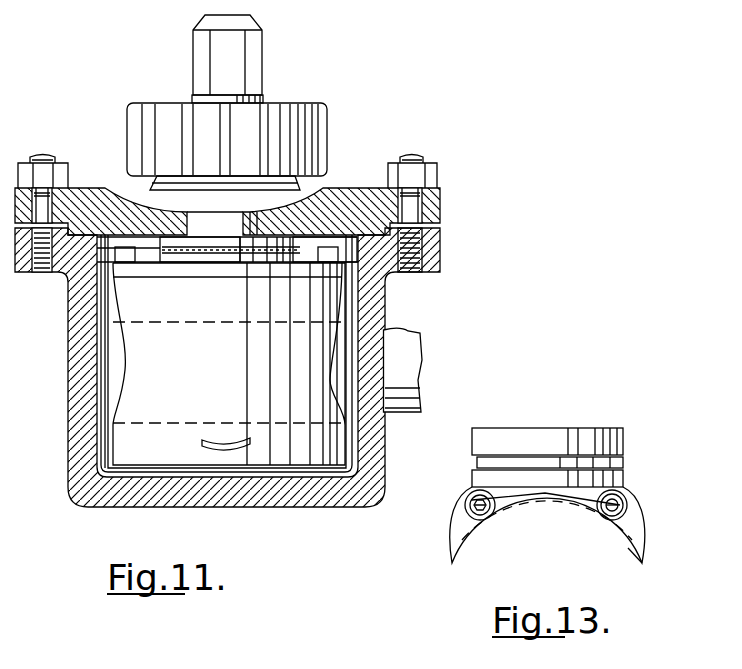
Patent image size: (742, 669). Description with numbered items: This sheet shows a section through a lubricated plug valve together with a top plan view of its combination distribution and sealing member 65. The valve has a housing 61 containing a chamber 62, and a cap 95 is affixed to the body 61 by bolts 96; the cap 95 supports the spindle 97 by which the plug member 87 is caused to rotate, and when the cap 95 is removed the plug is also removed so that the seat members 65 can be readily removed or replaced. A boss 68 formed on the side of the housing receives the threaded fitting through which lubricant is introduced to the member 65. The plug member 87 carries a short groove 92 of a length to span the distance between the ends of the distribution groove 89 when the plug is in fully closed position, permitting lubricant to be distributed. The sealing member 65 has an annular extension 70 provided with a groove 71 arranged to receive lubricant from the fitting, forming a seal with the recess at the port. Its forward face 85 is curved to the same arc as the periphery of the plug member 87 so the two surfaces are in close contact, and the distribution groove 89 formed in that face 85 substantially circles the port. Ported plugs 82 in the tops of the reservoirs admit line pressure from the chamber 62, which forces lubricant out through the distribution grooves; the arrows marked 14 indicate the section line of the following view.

In FIG. 11, the spindle 97 is at (262, 70).
In FIG. 11, the cap 95 is at (353, 192).
In FIG. 11, the bolts 96 is at (413, 160).
In FIG. 11, the boss 68 is at (408, 333).
In FIG. 11, the housing 61 is at (82, 367).
In FIG. 11, the chamber 62 is at (115, 385).
In FIG. 11, the plug member 87 is at (229, 364).
In FIG. 11, the short groove 92 is at (228, 442).
In FIG. 13, the annular extension 70 is at (498, 437).
In FIG. 13, the groove 71 is at (478, 460).
In FIG. 13, the combination distribution and sealing member 65 is at (640, 432).
In FIG. 13, the ported plugs 82 is at (618, 513).
In FIG. 13, the distribution groove 89 is at (538, 507).
In FIG. 13, the forward face 85 is at (622, 548).
In FIG. 13, the section line 14- 14 is at (482, 508).